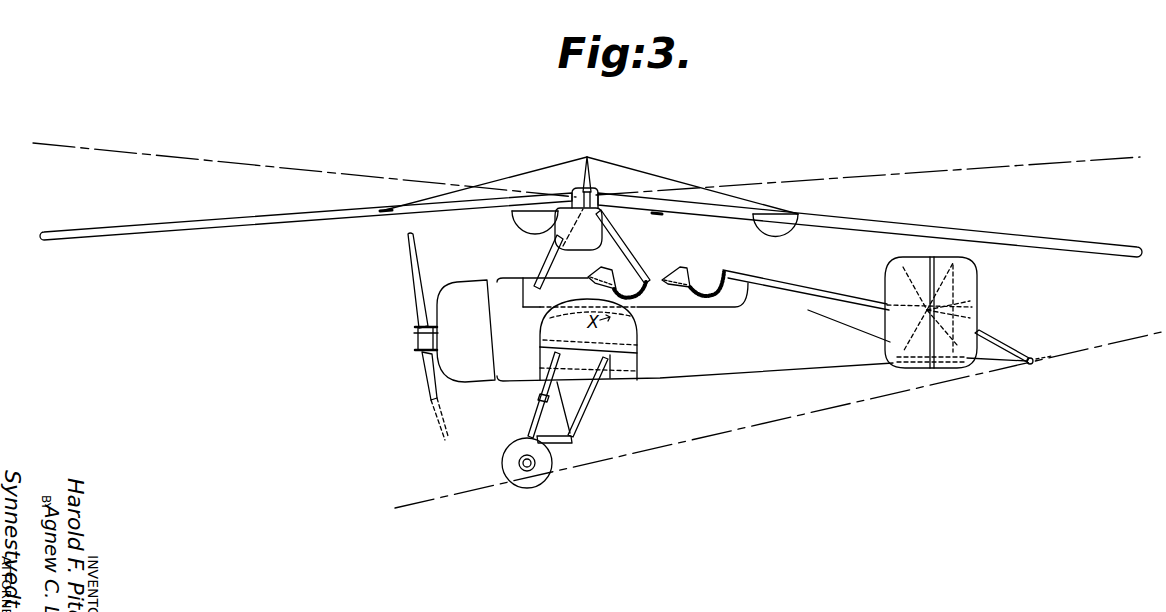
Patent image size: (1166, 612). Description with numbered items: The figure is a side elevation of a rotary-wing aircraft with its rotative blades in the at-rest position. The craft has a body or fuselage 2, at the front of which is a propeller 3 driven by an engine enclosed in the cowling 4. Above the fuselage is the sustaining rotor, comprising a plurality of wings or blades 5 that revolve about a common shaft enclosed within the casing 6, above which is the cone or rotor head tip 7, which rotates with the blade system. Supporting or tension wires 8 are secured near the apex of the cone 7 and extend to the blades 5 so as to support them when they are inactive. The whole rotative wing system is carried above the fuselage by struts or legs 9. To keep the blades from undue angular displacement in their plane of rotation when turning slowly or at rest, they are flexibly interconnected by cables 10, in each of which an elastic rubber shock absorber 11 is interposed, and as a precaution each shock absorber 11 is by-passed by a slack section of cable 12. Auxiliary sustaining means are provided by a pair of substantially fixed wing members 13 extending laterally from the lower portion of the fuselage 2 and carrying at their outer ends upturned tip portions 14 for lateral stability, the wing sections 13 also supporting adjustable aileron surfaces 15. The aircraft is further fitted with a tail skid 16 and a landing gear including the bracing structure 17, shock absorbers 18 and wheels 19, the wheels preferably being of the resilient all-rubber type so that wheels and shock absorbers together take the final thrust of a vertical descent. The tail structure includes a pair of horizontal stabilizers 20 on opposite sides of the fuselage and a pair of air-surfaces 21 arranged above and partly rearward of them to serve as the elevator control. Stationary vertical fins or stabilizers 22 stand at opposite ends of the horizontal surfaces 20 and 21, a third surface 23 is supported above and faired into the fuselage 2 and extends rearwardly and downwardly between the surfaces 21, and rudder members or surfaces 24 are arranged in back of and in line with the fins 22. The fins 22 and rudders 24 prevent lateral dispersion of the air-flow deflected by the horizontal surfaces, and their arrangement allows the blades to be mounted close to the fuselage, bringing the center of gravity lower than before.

The fuselage 2 is at (695, 324).
The propeller 3 is at (410, 278).
The cowling 4 is at (475, 373).
The wings or blades 5 is at (293, 222).
The casing 6 is at (594, 198).
The cone or rotor head tip 7 is at (582, 178).
The supporting or tension wires 8 is at (517, 175).
The struts or legs 9 is at (553, 264).
The cables 10 is at (397, 214).
The rubber shock absorber 11 is at (513, 212).
The slack section of cable 12 is at (532, 233).
The fixed wing members 13 is at (548, 353).
The upturned tip portions 14 is at (617, 330).
The aileron surfaces 15 is at (633, 367).
The tail skid 16 is at (1005, 352).
The bracing structure 17 is at (567, 438).
The shock absorbers 18 is at (540, 416).
The wheels 19 is at (512, 456).
The stabilizers 20 is at (913, 368).
The air-surfaces 21 is at (973, 299).
The fins or stabilizers 22 is at (921, 270).
The third surface 23 is at (883, 298).
The rudder members or surfaces 24 is at (972, 278).